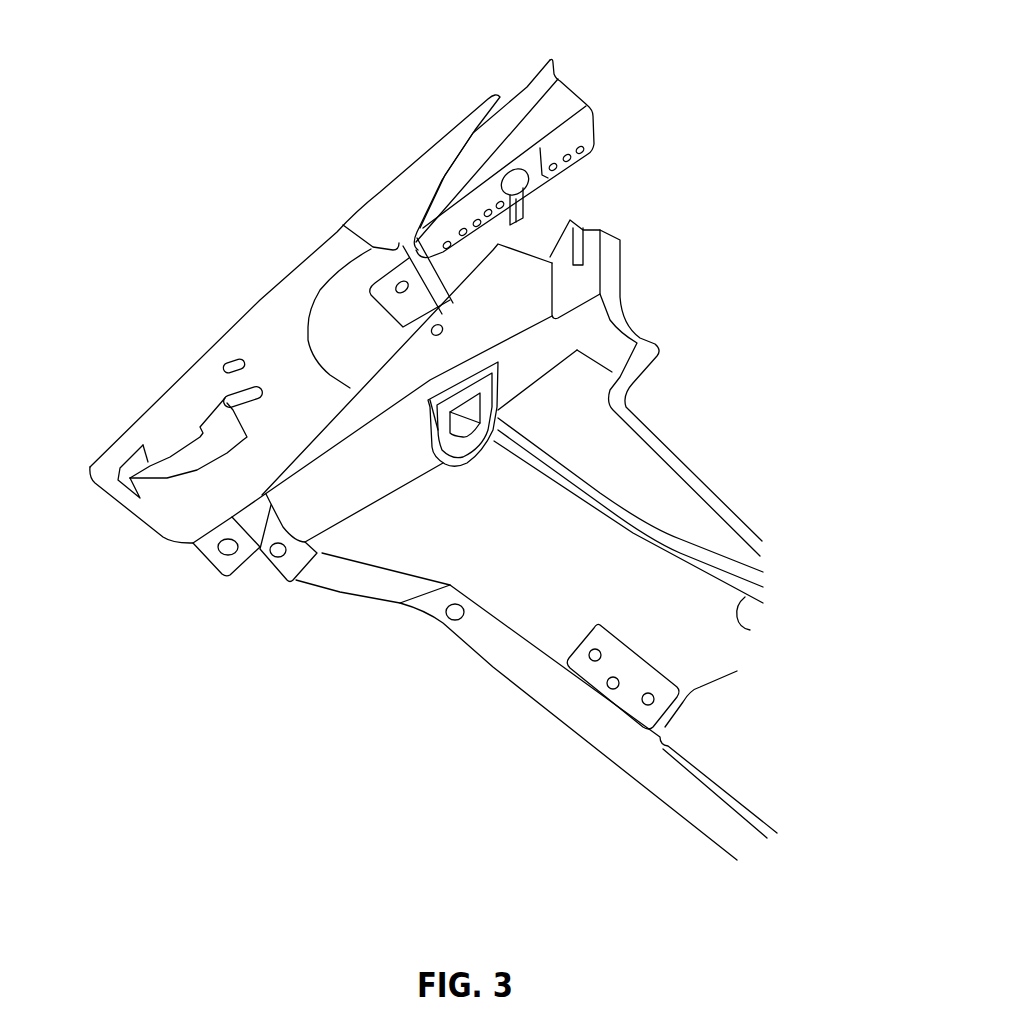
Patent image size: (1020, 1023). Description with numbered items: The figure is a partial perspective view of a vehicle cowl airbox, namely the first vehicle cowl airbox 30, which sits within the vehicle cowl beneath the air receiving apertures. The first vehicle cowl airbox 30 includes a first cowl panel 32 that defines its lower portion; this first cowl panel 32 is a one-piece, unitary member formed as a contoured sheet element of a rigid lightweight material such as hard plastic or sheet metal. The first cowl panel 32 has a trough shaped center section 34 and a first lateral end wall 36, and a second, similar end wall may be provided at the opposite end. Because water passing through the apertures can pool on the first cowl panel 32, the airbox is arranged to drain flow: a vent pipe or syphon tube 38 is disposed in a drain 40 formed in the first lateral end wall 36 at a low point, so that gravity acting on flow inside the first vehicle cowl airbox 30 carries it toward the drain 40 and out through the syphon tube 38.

The first vehicle cowl airbox 30 is at (703, 448).
The first cowl panel 32 is at (549, 621).
The trough shaped center section 34 is at (695, 595).
The first lateral end wall 36 is at (532, 308).
The syphon tube 38 is at (466, 432).
The drain 40 is at (484, 422).